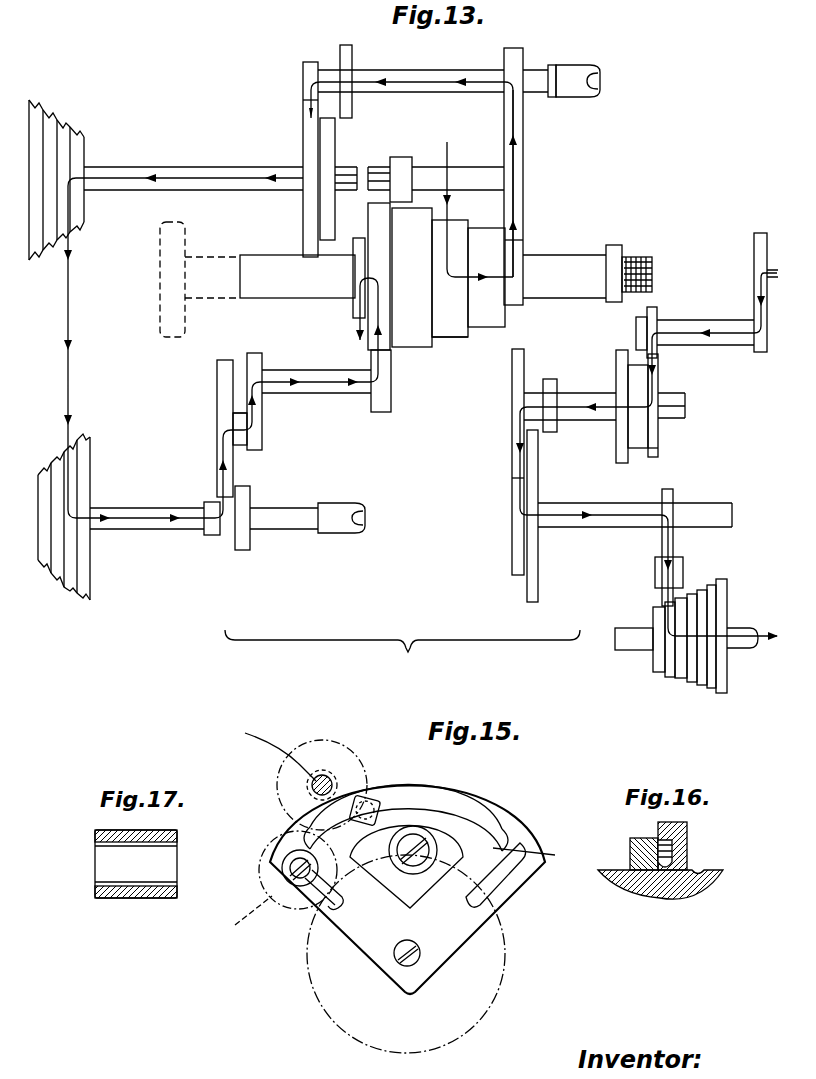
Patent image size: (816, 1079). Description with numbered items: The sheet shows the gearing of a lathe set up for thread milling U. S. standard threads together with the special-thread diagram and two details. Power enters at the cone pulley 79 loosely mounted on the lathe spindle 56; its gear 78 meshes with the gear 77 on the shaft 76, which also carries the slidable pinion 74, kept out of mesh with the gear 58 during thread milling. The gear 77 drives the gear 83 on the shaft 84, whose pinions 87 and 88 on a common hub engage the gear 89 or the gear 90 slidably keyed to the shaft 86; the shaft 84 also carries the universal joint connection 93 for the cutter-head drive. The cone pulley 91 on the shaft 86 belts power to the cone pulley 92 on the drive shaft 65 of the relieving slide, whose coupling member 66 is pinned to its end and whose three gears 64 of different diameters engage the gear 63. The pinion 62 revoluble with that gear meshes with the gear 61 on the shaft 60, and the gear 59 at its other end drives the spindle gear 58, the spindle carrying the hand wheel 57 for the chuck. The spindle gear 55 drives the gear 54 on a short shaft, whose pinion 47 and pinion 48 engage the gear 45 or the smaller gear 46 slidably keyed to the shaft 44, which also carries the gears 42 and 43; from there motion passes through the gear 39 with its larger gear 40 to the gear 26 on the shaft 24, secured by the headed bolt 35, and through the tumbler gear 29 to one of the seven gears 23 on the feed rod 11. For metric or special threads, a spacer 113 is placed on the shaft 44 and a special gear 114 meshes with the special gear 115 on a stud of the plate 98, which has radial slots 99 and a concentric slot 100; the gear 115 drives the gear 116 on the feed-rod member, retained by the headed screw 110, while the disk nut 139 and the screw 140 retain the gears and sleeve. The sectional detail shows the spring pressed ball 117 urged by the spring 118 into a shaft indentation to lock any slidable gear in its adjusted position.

In FIG. 13, the feed rod 11 is at (742, 627).
In FIG. 13, the gears 23 is at (685, 679).
In FIG. 13, the shaft 24 is at (649, 513).
In FIG. 13, the gear 26 is at (677, 537).
In FIG. 13, the intermediate or tumbler gear 29 is at (676, 551).
In FIG. 15, the headed bolt 35 is at (412, 838).
In FIG. 13, the gear 39 is at (512, 479).
In FIG. 13, the larger gear 40 is at (538, 473).
In FIG. 13, the gear 42 is at (510, 373).
In FIG. 13, the gear 43 is at (554, 398).
In FIG. 13, the shaft 44 is at (685, 396).
In FIG. 15, the shaft 44 is at (268, 748).
In FIG. 13, the gear 45 is at (614, 369).
In FIG. 13, the gear 46 is at (660, 438).
In FIG. 13, the pinion 47 is at (636, 322).
In FIG. 13, the pinion 48 is at (663, 311).
In FIG. 13, the gear 54 is at (764, 323).
In FIG. 13, the gear 55 is at (352, 269).
In FIG. 13, the lathe spindle 56 is at (247, 258).
In FIG. 13, the hand wheel 57 is at (188, 237).
In FIG. 13, the gear 58 is at (379, 246).
In FIG. 13, the gear 59 is at (396, 396).
In FIG. 13, the shaft 60 is at (312, 394).
In FIG. 13, the gear 61 is at (263, 356).
In FIG. 13, the pinion 62 is at (265, 433).
In FIG. 13, the gear 63 is at (218, 393).
In FIG. 13, the gears 64 is at (222, 548).
In FIG. 13, the drive shaft 65 is at (276, 506).
In FIG. 13, the member 66 is at (347, 507).
In FIG. 13, the pinion 74 is at (400, 158).
In FIG. 13, the shaft 76 is at (467, 168).
In FIG. 13, the gear 77 is at (525, 143).
In FIG. 13, the gear 78 is at (525, 248).
In FIG. 13, the cone pulley 79 is at (450, 338).
In FIG. 13, the gear 83 is at (523, 56).
In FIG. 13, the shaft 84 is at (437, 70).
In FIG. 13, the shaft 86 is at (200, 167).
In FIG. 13, the pinion 87 is at (305, 150).
In FIG. 13, the pinion 88 is at (354, 58).
In FIG. 13, the gear 89 is at (305, 134).
In FIG. 13, the gear 90 is at (336, 141).
In FIG. 13, the cone pulley 91 is at (72, 180).
In FIG. 13, the cone pulley 92 is at (121, 517).
In FIG. 13, the universal joint connection 93 is at (580, 63).
In FIG. 15, the plate 98 is at (488, 903).
In FIG. 15, the radial slots 99 is at (395, 898).
In FIG. 15, the concentric slot 100 is at (462, 812).
In FIG. 15, the headed screw 110 is at (407, 964).
In FIG. 17, the spacer 113 is at (118, 898).
In FIG. 15, the special gear 114 is at (305, 740).
In FIG. 15, the special gear 115 is at (262, 860).
In FIG. 15, the gear 116 is at (480, 962).
In FIG. 16, the spring pressed ball 117 is at (650, 895).
In FIG. 16, the spring 118 is at (668, 846).
In FIG. 15, the disk nut 139 is at (298, 880).
In FIG. 15, the screw 140 is at (303, 880).